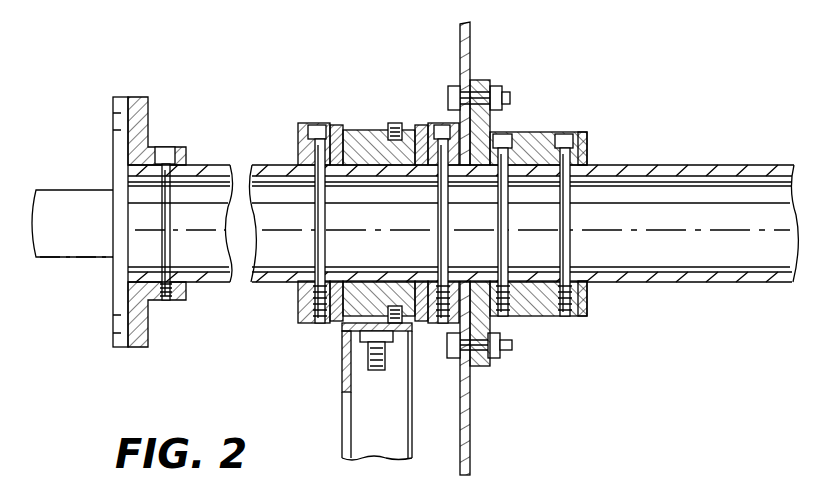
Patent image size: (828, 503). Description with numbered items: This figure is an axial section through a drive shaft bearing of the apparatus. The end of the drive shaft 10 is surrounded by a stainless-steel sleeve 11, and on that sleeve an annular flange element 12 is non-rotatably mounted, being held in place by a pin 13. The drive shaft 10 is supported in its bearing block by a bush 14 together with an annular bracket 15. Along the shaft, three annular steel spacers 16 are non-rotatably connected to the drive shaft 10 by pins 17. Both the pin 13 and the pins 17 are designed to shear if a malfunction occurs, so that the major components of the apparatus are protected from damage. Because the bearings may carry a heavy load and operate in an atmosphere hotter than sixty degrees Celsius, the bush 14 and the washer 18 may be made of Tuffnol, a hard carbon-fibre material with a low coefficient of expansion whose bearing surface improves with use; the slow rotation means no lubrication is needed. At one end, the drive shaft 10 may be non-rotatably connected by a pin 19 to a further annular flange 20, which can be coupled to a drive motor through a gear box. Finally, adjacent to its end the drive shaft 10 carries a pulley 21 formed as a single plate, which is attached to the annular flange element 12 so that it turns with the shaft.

The drive shaft 10 is at (658, 283).
The stainless-steel sleeve 11 is at (588, 166).
The annular flange element 12 is at (528, 132).
The pin 13 is at (508, 231).
The bush 14 is at (361, 123).
The annular bracket 15 is at (397, 123).
The annular steel spacer 16 is at (300, 137).
The pin 17 is at (325, 220).
The washer 18 is at (342, 123).
The pin 19 is at (171, 226).
The further annular flange 20 is at (148, 104).
The pulley 21 is at (471, 50).